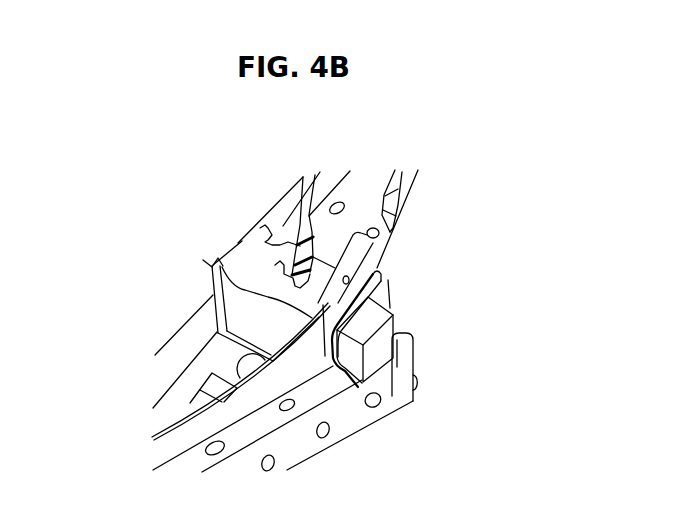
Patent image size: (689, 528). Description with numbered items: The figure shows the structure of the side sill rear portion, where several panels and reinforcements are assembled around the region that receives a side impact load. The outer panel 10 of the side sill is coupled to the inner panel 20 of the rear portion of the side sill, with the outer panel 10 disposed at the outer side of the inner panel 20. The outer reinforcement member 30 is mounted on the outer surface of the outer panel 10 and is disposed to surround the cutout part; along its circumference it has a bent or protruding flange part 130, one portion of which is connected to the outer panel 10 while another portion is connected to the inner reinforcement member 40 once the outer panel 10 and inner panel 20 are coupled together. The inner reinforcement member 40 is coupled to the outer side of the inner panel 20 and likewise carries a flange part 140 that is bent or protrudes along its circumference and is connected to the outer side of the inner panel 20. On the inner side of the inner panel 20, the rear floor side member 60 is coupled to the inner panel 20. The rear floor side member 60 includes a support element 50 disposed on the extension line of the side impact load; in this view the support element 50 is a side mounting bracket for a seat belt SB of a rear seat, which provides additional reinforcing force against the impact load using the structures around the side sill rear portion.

The outer panel 10 is at (347, 422).
The inner panel 20 is at (174, 409).
The outer reinforcement member 30 is at (387, 337).
The inner reinforcement member 40 is at (377, 271).
The support element 50 is at (241, 257).
The rear floor side member 60 is at (357, 188).
The flange part 130 is at (375, 292).
The flange part 140 is at (380, 264).
The seat belt SB is at (308, 187).